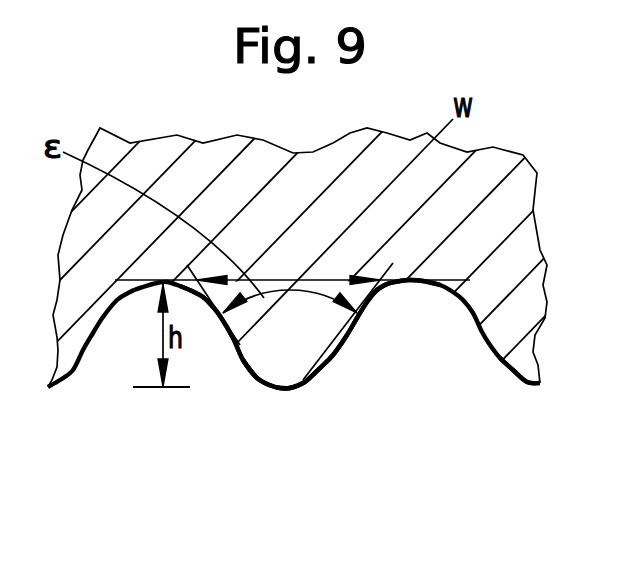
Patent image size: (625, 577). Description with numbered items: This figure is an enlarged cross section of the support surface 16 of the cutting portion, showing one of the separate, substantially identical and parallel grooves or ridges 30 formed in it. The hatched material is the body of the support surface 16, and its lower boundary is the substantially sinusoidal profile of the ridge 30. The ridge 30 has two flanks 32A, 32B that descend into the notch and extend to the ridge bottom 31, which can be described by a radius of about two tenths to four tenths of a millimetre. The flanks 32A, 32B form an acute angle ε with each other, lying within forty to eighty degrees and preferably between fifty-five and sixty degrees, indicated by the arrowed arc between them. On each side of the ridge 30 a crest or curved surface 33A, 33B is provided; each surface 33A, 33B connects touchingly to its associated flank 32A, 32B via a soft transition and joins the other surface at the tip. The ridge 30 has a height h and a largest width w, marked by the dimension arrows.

The support surface 16 is at (390, 425).
The ridge 30 is at (290, 332).
The ridge bottom 31 is at (418, 284).
The flank 32A is at (243, 360).
The flank 32B is at (357, 337).
The crest or curved surface 33A is at (293, 388).
The crest or curved surface 33B is at (528, 386).